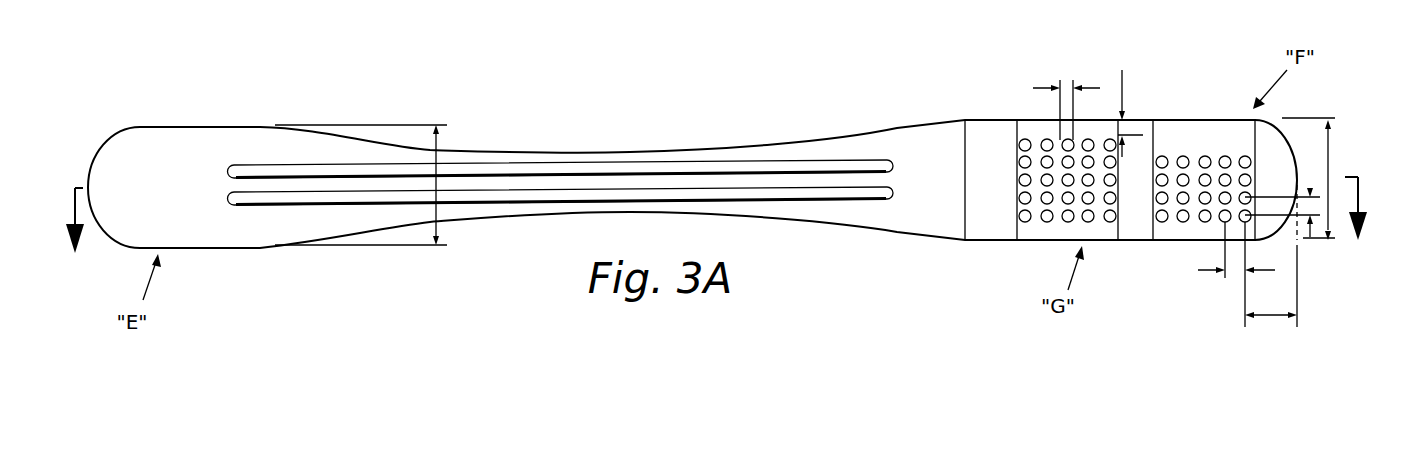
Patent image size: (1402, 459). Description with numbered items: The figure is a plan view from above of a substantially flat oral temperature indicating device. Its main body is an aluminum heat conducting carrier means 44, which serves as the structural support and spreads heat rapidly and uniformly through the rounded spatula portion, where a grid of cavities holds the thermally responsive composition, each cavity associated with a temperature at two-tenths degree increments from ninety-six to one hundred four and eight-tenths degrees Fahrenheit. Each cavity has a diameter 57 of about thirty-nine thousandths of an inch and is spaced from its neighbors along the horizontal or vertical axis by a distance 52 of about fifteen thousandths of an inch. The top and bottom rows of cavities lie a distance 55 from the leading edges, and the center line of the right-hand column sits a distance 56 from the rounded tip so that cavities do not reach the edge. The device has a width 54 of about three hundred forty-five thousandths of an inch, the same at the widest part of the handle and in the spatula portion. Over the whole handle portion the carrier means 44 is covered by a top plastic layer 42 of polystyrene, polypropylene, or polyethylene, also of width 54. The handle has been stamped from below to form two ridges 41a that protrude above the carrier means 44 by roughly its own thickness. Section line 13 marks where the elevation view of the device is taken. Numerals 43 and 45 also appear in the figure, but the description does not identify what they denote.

The section line 13— 13 is at (719, 239).
The ridges, ribs, or abutments 41a is at (600, 162).
The top plastic layer 42 is at (183, 143).
The indicator holes 43 is at (1035, 127).
The heat conducting carrier means 44 is at (980, 130).
The scale numerals 45 is at (998, 222).
The center-to-center cavity spacing distance 52 is at (1310, 188).
The width 54 is at (437, 158).
The distance from cavity rows to leading edges 55 is at (1123, 74).
The distance from forward cavity column to rounded tip 56 is at (1272, 318).
The cavity diameter 57 is at (1033, 88).